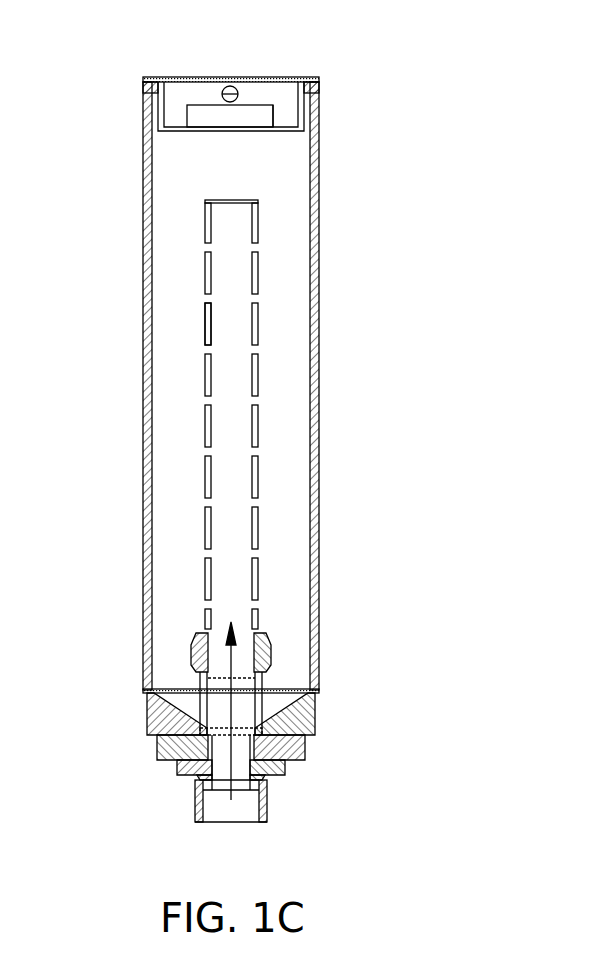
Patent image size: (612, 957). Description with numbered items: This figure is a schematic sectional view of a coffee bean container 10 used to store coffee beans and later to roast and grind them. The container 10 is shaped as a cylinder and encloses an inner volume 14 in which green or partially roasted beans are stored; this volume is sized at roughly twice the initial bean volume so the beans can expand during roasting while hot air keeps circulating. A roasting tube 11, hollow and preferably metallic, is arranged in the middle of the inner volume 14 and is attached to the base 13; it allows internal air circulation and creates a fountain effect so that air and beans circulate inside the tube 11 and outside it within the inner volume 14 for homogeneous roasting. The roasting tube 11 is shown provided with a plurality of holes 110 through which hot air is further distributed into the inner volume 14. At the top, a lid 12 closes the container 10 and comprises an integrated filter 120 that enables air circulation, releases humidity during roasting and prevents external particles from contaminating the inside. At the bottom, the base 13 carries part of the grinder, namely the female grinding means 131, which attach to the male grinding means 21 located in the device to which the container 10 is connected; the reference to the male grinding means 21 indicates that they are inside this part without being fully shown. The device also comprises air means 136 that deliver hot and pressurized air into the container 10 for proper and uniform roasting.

The coffee bean container 10 is at (358, 235).
The roasting tube 11 is at (237, 381).
The holes 110 is at (253, 343).
The lid 12 is at (173, 110).
The integrated filter 120 is at (283, 108).
The base 13 is at (308, 693).
The female grinding means 131 is at (158, 742).
The air means 136 is at (193, 808).
The inner volume 14 is at (292, 506).
The male grinding means 21 is at (218, 775).